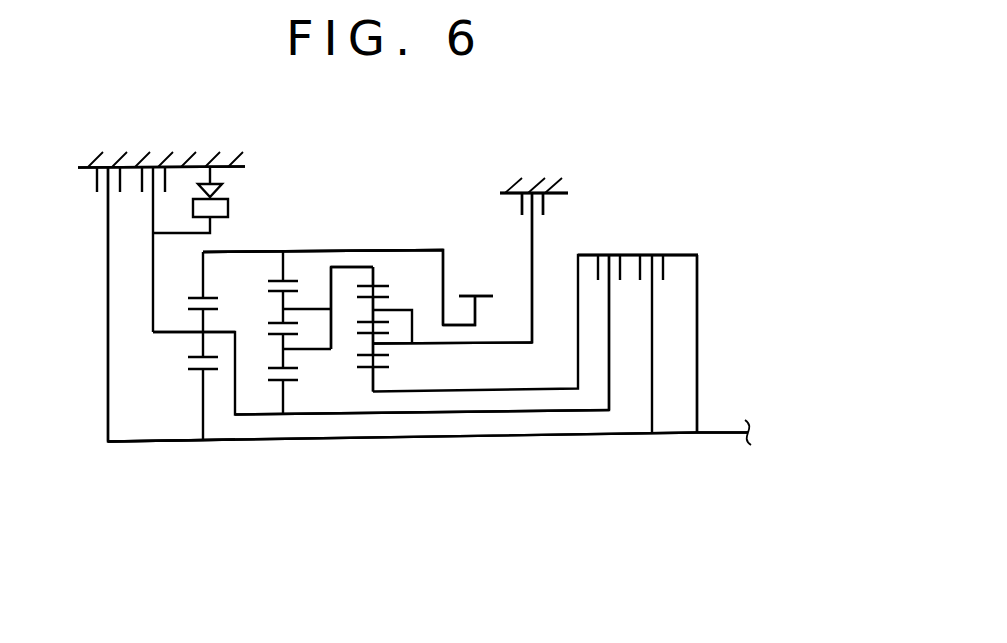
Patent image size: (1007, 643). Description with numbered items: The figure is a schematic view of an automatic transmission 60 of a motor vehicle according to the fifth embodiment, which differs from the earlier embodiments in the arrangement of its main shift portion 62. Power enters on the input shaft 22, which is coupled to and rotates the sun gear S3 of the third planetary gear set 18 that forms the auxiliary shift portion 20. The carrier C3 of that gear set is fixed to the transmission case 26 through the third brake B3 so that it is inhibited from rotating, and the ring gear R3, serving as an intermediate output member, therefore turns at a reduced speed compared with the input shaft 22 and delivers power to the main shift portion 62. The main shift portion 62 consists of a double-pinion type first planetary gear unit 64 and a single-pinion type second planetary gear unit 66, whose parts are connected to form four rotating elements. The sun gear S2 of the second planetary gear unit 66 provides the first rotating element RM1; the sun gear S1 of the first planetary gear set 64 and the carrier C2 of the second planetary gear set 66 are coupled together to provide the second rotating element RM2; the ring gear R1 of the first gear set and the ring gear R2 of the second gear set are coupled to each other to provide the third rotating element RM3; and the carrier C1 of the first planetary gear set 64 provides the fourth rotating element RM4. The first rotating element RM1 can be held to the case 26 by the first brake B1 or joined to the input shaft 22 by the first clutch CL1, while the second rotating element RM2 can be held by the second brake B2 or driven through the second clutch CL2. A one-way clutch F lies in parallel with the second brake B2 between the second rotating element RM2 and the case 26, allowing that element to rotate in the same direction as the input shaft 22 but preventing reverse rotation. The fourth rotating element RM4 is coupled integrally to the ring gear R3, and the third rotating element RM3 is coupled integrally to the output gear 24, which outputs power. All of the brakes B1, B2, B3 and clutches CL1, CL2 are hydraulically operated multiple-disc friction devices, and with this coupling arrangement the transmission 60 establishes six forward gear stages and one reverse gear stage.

The third planetary gear set 18 is at (378, 261).
The auxiliary shift portion 20 is at (583, 189).
The input shaft 22 is at (728, 434).
The output gear 24 is at (462, 296).
The transmission case 26 is at (180, 163).
The automatic transmission 60 is at (713, 152).
The main shift portion 62 is at (91, 440).
The first planetary gear unit 64 is at (308, 248).
The second planetary gear unit 66 is at (188, 452).
The first brake B1 is at (86, 184).
The second brake B2 is at (138, 249).
The third brake B3 is at (510, 259).
The one-way clutch F is at (199, 198).
The ring gear R1 is at (280, 281).
The ring gear R2 is at (201, 298).
The ring gear R3 is at (381, 288).
The sun gear S1 is at (268, 367).
The sun gear S2 is at (200, 372).
The sun gear S3 is at (380, 368).
The carrier C1 is at (331, 345).
The carrier C2 is at (153, 311).
The carrier C3 is at (470, 344).
The first clutch CL1 is at (667, 327).
The second clutch CL2 is at (635, 315).
The first rotating element RM1 is at (333, 438).
The second rotating element RM2 is at (447, 413).
The third rotating element RM3 is at (244, 250).
The fourth rotating element RM4 is at (347, 267).